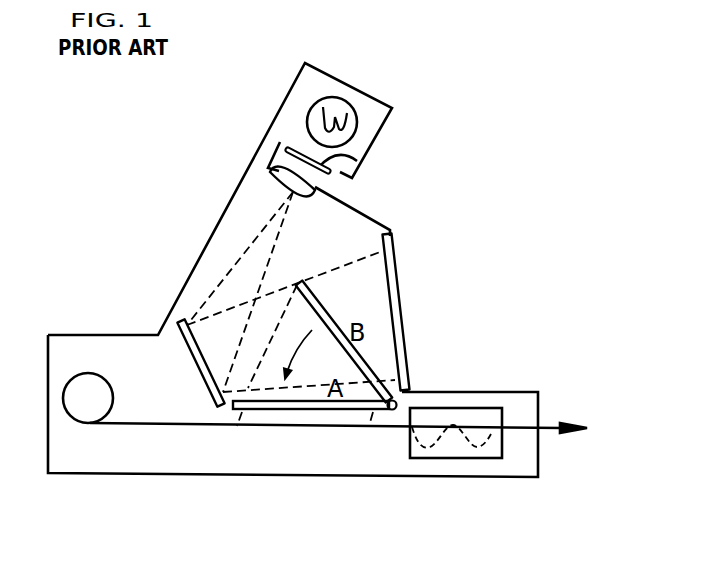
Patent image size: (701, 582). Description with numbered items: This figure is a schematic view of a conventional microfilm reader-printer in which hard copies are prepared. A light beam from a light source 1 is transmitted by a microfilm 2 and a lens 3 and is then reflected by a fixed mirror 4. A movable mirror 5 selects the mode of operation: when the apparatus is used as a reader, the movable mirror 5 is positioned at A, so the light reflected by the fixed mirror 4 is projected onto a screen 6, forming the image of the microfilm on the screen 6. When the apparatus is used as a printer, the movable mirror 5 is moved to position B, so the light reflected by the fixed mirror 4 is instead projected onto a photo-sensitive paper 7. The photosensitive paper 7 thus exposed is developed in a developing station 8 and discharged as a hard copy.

The light source 1 is at (350, 98).
The microfilm 2 is at (357, 162).
The lens 3 is at (320, 188).
The fixed mirror 4 is at (191, 361).
The movable mirror 5 is at (323, 308).
The screen 6 is at (401, 329).
The photo-sensitive paper 7 is at (341, 412).
The developing station 8 is at (474, 407).